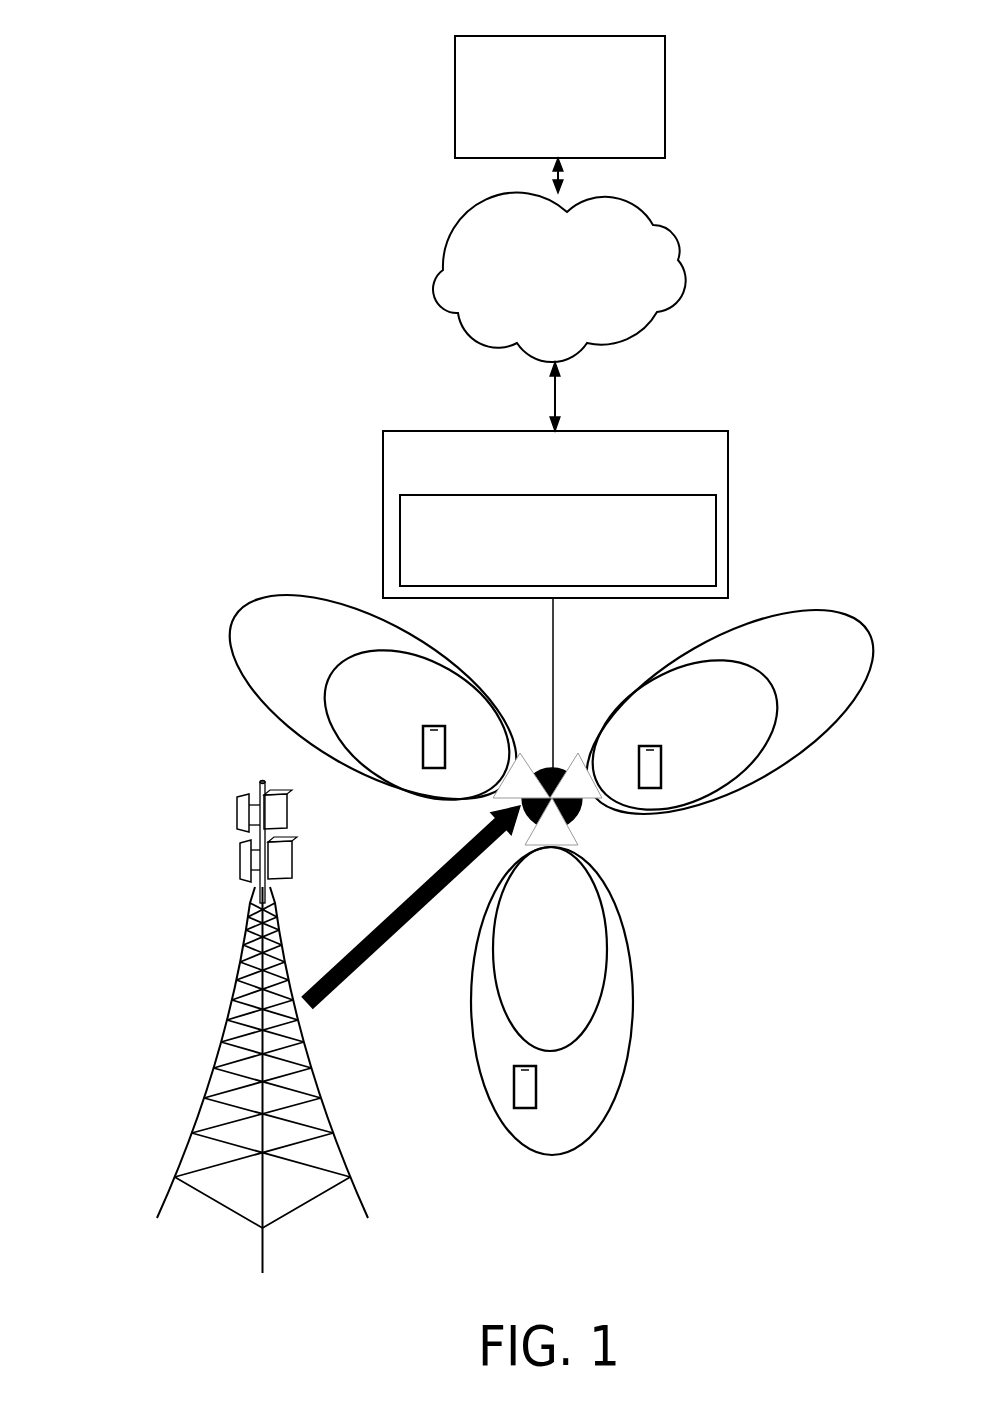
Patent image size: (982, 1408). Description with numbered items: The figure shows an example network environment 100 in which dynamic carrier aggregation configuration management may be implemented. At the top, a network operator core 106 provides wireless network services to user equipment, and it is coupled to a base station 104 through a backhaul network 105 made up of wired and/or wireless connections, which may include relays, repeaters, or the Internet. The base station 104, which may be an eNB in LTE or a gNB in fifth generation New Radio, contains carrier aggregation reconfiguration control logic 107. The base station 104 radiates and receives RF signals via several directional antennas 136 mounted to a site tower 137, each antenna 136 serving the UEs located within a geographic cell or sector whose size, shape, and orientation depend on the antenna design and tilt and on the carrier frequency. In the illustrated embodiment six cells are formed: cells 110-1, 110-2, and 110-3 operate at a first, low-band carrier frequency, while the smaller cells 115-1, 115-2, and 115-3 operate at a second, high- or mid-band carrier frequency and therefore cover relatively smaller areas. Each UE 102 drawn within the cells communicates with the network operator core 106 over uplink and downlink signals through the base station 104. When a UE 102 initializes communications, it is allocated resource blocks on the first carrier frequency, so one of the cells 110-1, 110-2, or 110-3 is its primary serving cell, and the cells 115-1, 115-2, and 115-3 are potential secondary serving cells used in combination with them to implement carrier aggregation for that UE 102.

The network environment 100 is at (822, 62).
The UE 102 is at (433, 768).
The base station 104 is at (652, 476).
The backhaul network 105 is at (580, 304).
The network operator core 106 is at (580, 137).
The carrier aggregation reconfiguration control logic 107 is at (577, 581).
The cell 110-1 is at (840, 652).
The cell 110-2 is at (617, 1084).
The cell 110-3 is at (317, 634).
The cell 115-1 is at (745, 709).
The cell 115-2 is at (583, 962).
The cell 115-3 is at (408, 682).
The directional antenna 136 is at (518, 757).
The site tower 137 is at (326, 1042).